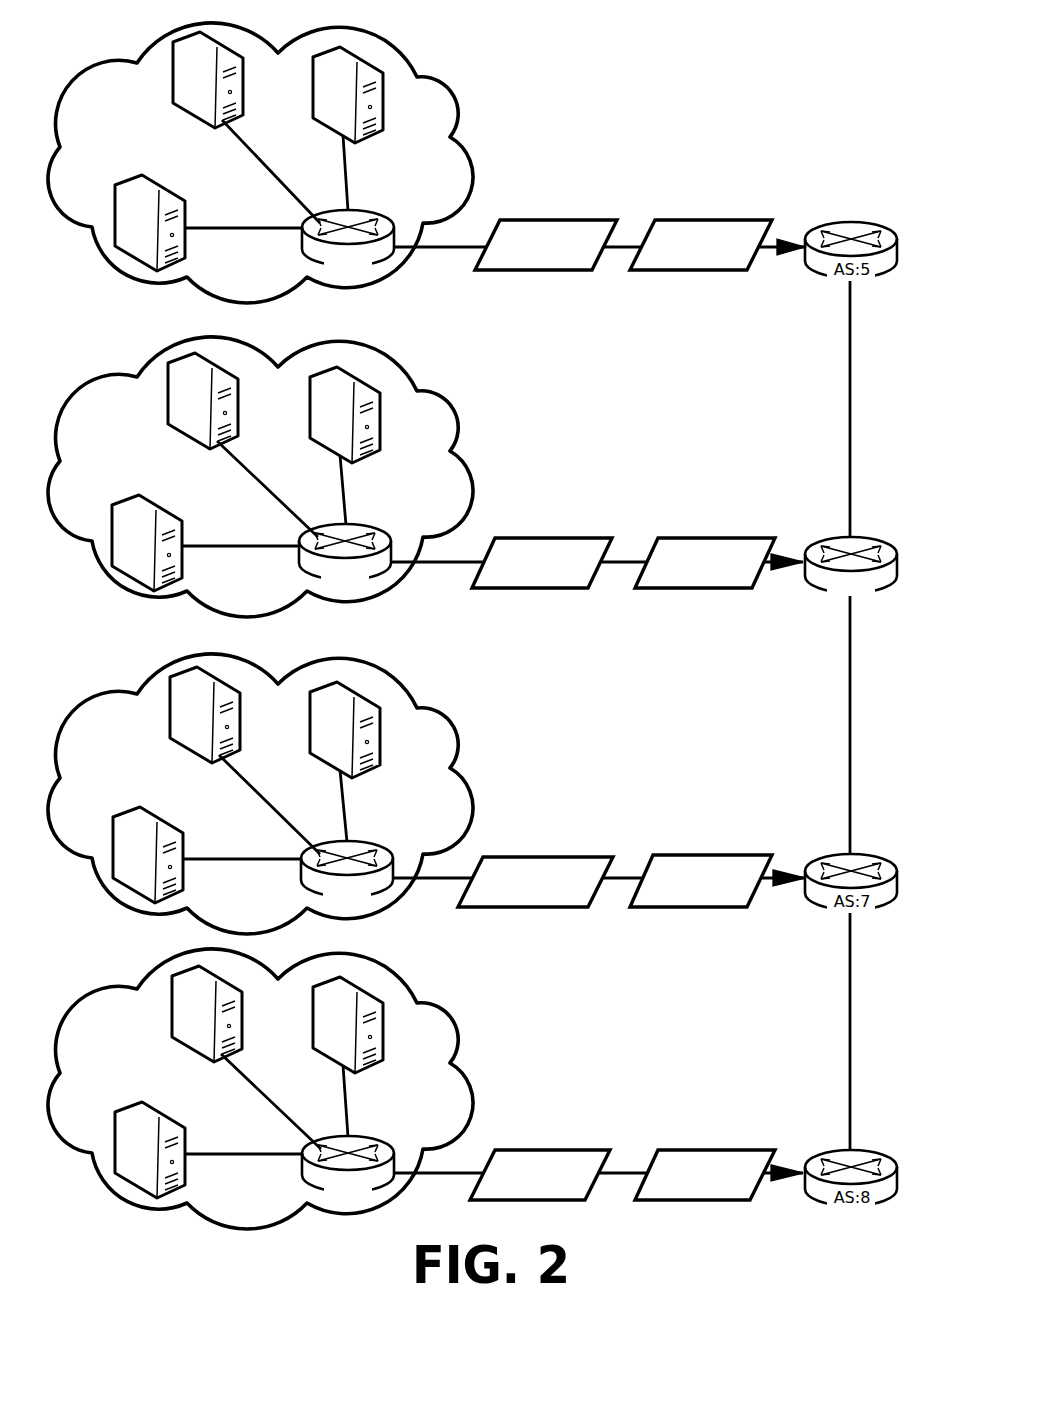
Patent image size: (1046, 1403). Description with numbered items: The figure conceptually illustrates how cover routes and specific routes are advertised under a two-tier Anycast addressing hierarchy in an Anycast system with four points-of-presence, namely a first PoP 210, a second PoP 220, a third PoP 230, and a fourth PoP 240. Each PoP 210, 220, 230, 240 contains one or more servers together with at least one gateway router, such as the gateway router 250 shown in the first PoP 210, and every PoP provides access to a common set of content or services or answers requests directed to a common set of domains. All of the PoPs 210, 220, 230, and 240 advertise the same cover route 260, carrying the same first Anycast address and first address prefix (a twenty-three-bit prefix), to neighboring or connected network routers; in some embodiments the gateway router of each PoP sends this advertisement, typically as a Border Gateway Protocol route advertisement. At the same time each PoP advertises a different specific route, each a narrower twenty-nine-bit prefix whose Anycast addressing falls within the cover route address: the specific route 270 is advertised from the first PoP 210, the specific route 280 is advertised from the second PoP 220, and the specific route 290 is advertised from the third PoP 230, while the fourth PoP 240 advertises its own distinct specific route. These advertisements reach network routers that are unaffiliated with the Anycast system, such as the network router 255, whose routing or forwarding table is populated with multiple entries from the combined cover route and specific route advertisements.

The first point-of-presence 210 is at (455, 100).
The second point-of-presence 220 is at (445, 410).
The third point-of-presence 230 is at (463, 743).
The fourth point-of-presence 240 is at (463, 1038).
The gateway router 250 is at (365, 212).
The network router 255 is at (863, 538).
The cover route 260 is at (710, 222).
The specific route 270 is at (557, 218).
The specific route 280 is at (553, 538).
The specific route 290 is at (547, 855).